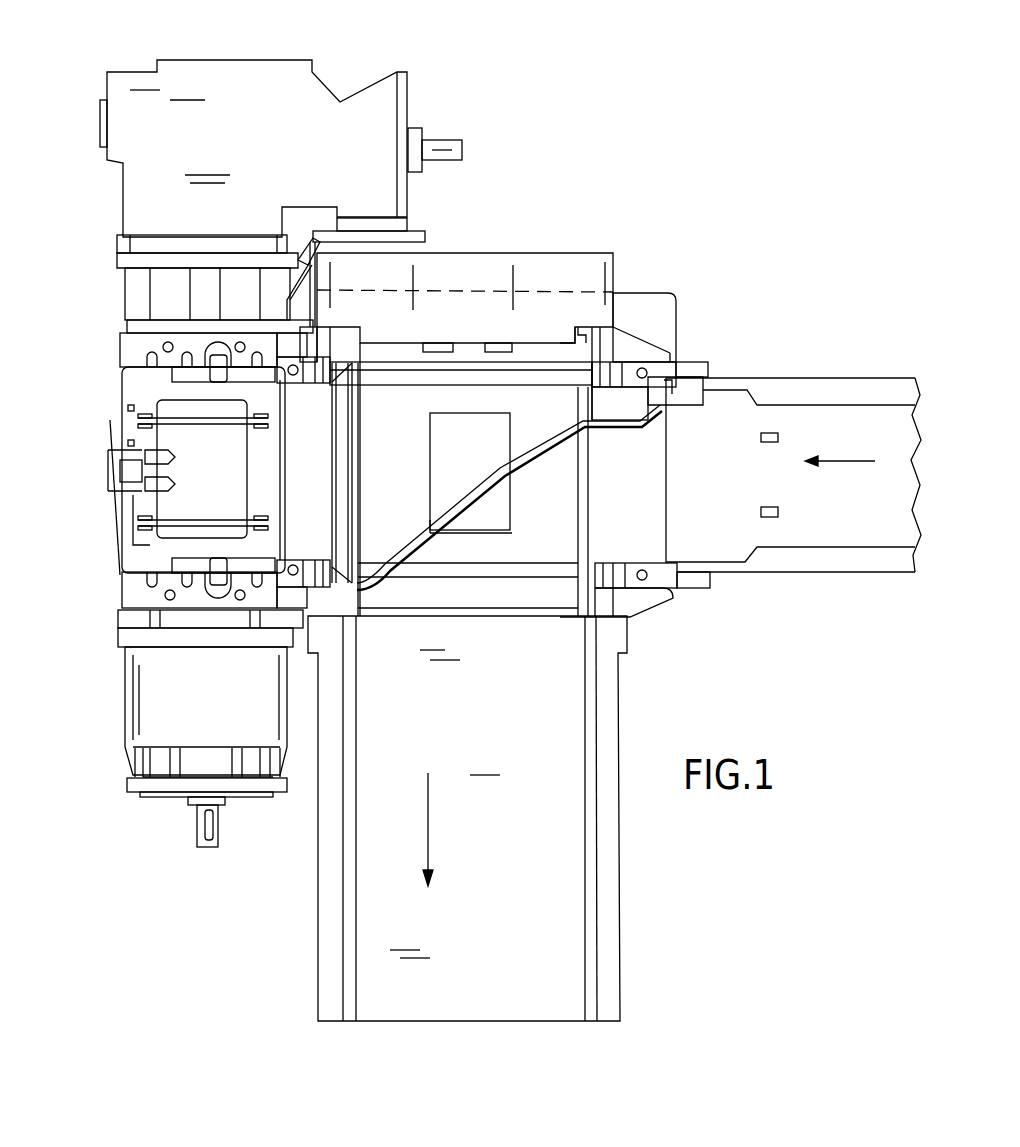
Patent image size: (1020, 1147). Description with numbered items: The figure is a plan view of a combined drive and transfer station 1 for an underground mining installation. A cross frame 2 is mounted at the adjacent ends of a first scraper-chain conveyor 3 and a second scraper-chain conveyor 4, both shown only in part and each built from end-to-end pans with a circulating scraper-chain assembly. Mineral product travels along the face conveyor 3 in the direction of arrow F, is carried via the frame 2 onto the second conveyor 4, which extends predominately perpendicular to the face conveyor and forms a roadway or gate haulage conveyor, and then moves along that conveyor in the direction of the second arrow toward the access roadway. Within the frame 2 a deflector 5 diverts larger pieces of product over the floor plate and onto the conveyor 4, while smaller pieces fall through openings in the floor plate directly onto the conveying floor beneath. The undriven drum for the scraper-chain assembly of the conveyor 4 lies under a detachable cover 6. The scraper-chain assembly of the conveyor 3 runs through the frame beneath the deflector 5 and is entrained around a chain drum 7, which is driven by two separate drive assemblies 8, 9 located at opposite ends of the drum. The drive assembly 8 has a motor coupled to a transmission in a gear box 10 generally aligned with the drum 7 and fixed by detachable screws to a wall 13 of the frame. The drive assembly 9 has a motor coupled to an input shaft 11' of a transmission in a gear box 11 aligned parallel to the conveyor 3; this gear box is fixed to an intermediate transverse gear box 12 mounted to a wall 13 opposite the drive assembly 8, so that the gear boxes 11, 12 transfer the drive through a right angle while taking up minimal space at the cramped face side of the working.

The combined drive and transfer station 1 is at (597, 237).
The cross frame 2 is at (592, 385).
The first scraper-chain conveyor 3 is at (862, 418).
The second scraper-chain conveyor 4 is at (552, 858).
The deflector 5 is at (547, 443).
The detachable cover 6 is at (542, 272).
The chain drum 7 is at (150, 432).
The drive assembly 8 is at (108, 722).
The drive assembly 9 is at (88, 122).
The gear box 10 is at (168, 760).
The gear box 11 is at (426, 98).
The input shaft 11' is at (464, 120).
The intermediate transverse gear box 12 is at (167, 280).
The wall 13 is at (140, 347).